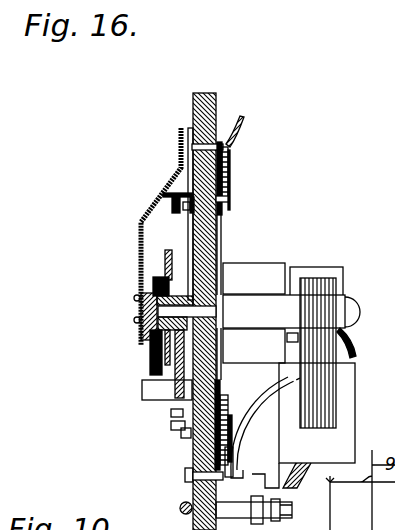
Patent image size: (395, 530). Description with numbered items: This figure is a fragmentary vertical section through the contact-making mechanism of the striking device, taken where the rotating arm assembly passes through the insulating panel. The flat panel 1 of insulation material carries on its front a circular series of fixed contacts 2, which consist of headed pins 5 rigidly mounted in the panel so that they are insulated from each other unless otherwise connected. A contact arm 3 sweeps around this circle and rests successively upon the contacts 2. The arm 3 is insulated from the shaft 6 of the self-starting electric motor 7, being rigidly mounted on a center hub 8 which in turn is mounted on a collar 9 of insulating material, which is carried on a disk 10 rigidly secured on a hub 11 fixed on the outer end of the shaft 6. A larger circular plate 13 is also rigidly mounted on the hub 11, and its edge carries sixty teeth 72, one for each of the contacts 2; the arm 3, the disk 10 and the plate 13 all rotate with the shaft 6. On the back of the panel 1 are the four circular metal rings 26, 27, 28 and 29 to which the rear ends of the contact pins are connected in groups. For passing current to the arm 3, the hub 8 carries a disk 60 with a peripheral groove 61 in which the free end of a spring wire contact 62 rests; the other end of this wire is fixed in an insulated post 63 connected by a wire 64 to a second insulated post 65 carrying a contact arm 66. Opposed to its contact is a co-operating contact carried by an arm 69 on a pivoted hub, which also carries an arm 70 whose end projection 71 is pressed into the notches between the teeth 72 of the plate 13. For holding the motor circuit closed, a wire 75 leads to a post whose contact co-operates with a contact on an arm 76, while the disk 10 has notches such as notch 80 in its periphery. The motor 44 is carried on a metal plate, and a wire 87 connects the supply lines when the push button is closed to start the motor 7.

The flat panel 1 is at (213, 101).
The fixed contacts 2 is at (190, 140).
The contact arm 3 is at (131, 251).
The headed pins 5 is at (170, 512).
The shaft 6 is at (226, 268).
The self-starting electric motor 7 is at (270, 258).
The center hub 8 is at (150, 330).
The collar 9 is at (139, 305).
The disk 10 is at (160, 364).
The hub 11 is at (146, 226).
The circular plate 13 is at (178, 382).
The outer circuit ring 26 is at (220, 147).
The circuit ring 27 is at (192, 448).
The circuit ring 28 is at (232, 182).
The inner circuit ring 29 is at (291, 365).
The motor 44 is at (360, 490).
The disk 60 is at (142, 296).
The peripheral groove 61 is at (156, 280).
The spring wire contact 62 is at (150, 352).
The insulated post 63 is at (172, 378).
The wire 64 is at (224, 222).
The insulated post 65 is at (229, 172).
The contact arm 66 is at (178, 172).
The arm 69 is at (174, 172).
The arm 70 is at (228, 205).
The end projection 71 is at (163, 203).
The teeth 72 is at (190, 386).
The wire 75 is at (176, 426).
The arm 76 is at (172, 428).
The notch 80 is at (216, 358).
The wire 87 is at (263, 493).